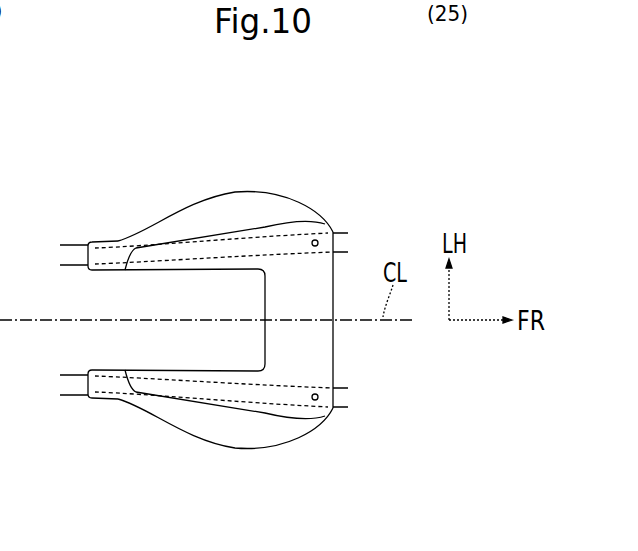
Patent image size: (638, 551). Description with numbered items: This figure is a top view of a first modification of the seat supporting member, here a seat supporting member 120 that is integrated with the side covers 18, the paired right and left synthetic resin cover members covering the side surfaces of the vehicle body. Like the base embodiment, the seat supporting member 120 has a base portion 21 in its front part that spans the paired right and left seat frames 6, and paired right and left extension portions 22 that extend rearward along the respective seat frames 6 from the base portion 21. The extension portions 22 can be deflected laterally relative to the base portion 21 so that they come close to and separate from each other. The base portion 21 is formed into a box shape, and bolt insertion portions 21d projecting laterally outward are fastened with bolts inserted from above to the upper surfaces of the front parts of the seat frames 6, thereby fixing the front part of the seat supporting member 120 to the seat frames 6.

The seat supporting member 120 is at (272, 170).
The side cover 18 is at (222, 200).
The extension portion 22 is at (200, 242).
The base portion 21 is at (323, 349).
The bolt insertion portion 21d is at (318, 238).
The seat frame 6 is at (347, 243).